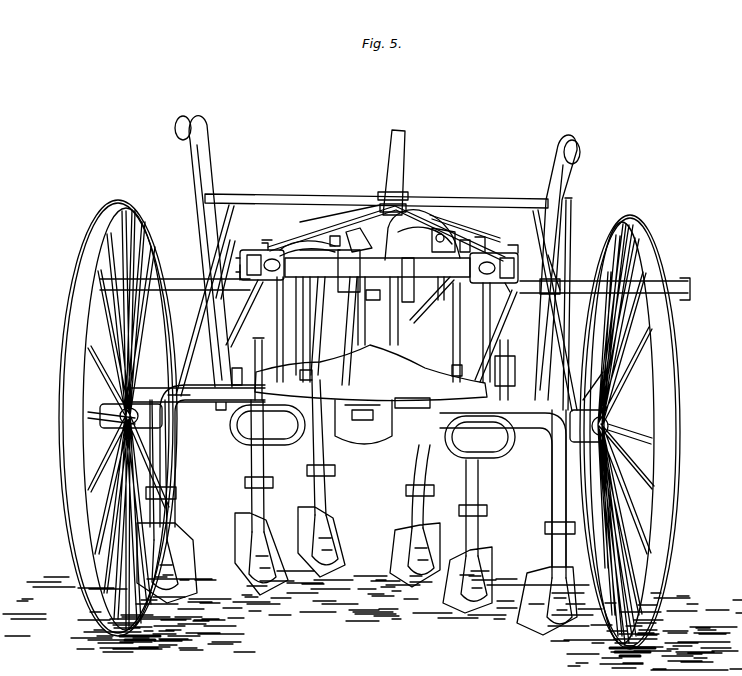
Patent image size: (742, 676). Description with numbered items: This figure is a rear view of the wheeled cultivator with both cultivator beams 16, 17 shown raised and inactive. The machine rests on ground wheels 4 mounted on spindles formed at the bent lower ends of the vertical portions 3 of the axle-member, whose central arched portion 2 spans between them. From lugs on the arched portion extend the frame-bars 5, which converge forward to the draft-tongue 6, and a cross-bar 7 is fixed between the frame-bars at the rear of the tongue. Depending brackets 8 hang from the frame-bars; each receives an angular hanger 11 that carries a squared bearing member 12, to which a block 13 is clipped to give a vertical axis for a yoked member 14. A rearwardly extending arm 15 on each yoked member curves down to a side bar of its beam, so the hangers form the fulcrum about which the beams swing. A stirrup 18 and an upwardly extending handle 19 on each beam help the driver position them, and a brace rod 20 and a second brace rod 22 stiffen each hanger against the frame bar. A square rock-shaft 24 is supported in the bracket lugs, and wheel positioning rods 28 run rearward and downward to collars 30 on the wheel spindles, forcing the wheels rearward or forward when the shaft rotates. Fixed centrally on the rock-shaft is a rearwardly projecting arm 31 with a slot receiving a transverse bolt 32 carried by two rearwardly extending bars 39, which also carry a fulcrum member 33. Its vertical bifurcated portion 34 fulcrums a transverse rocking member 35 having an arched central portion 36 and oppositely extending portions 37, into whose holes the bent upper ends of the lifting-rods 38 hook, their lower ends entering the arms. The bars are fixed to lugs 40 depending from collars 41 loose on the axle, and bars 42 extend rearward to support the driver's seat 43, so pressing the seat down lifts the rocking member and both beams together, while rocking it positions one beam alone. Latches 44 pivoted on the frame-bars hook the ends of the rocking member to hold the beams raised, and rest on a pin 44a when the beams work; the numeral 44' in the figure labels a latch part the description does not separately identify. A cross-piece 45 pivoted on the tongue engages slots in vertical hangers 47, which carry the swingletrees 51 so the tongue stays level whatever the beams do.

The arched portion 2 is at (478, 245).
The vertical portions 3 is at (198, 333).
The ground wheels 4 is at (62, 390).
The frame-bars 5 is at (340, 215).
The draft-tongue 6 is at (404, 152).
The cross-bar 7 is at (440, 228).
The depending brackets 8 is at (448, 238).
The angular hanger 11 is at (303, 335).
The squared bearing member 12 is at (306, 370).
The block 13 is at (240, 368).
The yoked member 14 is at (258, 345).
The rearwardly extending arm 15 is at (428, 408).
The cultivator beam 16 is at (535, 428).
The cultivator beam 17 is at (205, 404).
The stirrup 18 is at (372, 431).
The handle 19 is at (206, 134).
The brace rod 20 is at (246, 300).
The second brace rod 22 is at (440, 300).
The square rock-shaft 24 is at (464, 215).
The wheel positioning rod 28 is at (224, 248).
The collars 30 is at (175, 430).
The rearwardly projecting arm 31 is at (366, 290).
The transverse bolt 32 is at (372, 302).
The fulcrum member 33 is at (305, 242).
The vertical bifurcated portion 34 is at (342, 208).
The transverse rocking member 35 is at (320, 246).
The arched central portion 36 is at (412, 225).
The oppositely extending portions 37 is at (480, 238).
The lifting-rod 38 is at (475, 315).
The rearwardly extending bars 39 is at (358, 235).
The lugs 40 is at (351, 305).
The collars 41 is at (377, 276).
The bars 42 is at (400, 320).
The driver's seat 43 is at (371, 394).
The latches 44 is at (377, 263).
The pin 44a is at (503, 230).
The bracket 44' is at (266, 222).
The cross-piece 45 is at (240, 194).
The vertical hangers 47 is at (573, 238).
The swingletrees 51 is at (178, 278).